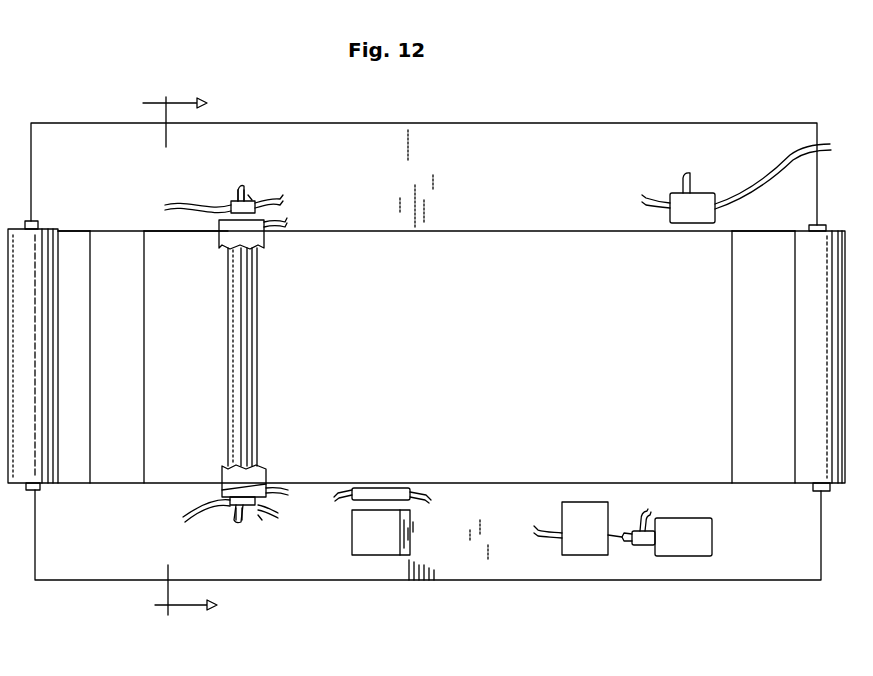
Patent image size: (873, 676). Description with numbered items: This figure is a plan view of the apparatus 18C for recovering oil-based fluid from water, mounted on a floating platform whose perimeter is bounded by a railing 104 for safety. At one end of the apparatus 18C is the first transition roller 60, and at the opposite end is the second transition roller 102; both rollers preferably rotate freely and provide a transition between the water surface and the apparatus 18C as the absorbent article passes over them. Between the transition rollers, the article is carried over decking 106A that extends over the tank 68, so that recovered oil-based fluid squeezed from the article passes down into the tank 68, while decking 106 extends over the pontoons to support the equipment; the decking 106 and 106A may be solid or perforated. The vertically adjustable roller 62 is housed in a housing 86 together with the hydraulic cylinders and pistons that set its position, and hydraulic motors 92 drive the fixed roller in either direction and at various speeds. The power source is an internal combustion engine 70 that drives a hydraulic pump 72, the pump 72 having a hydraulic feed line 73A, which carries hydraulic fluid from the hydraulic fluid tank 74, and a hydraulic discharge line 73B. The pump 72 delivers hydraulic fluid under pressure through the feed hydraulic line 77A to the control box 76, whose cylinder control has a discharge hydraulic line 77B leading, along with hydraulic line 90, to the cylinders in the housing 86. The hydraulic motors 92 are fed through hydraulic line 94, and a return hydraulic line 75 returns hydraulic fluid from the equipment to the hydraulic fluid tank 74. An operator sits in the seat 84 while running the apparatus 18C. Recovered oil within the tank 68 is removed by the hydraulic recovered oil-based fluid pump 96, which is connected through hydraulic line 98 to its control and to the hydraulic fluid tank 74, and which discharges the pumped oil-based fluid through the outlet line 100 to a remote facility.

The apparatus 18C is at (107, 110).
The first transition roller 60 is at (24, 482).
The vertically adjustable roller 62 is at (262, 292).
The tank 68 is at (70, 250).
The internal combustion engine 70 is at (698, 548).
The hydraulic pump 72 is at (640, 550).
The hydraulic feed line 73A is at (622, 548).
The hydraulic discharge line 73B is at (652, 514).
The hydraulic fluid tank 74 is at (591, 542).
The return hydraulic line 75 is at (539, 537).
The control box 76 is at (386, 488).
The feed hydraulic line 77A is at (428, 490).
The discharge hydraulic line 77B is at (338, 498).
The seat 84 is at (408, 518).
The housing 86 is at (218, 247).
The hydraulic line 90 is at (162, 207).
The hydraulic motors 92 is at (240, 196).
The hydraulic line 94 is at (248, 195).
The recovered oil-based fluid pump 96 is at (698, 195).
The hydraulic line 98 is at (665, 196).
The outlet line 100 is at (758, 182).
The second transition roller 102 is at (840, 490).
The railing 104 is at (530, 118).
The decking 106 is at (465, 181).
The decking 106A is at (140, 349).